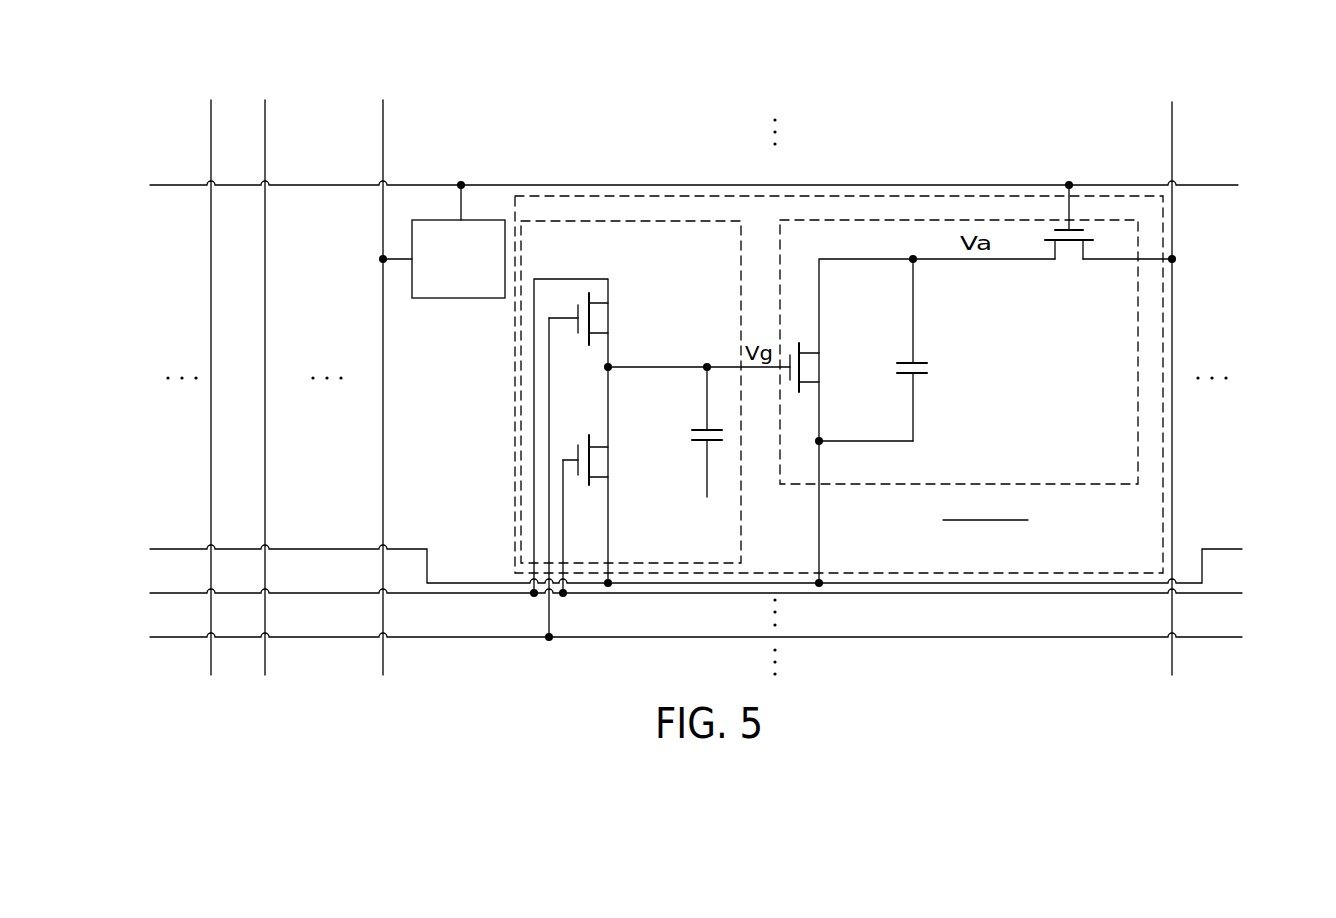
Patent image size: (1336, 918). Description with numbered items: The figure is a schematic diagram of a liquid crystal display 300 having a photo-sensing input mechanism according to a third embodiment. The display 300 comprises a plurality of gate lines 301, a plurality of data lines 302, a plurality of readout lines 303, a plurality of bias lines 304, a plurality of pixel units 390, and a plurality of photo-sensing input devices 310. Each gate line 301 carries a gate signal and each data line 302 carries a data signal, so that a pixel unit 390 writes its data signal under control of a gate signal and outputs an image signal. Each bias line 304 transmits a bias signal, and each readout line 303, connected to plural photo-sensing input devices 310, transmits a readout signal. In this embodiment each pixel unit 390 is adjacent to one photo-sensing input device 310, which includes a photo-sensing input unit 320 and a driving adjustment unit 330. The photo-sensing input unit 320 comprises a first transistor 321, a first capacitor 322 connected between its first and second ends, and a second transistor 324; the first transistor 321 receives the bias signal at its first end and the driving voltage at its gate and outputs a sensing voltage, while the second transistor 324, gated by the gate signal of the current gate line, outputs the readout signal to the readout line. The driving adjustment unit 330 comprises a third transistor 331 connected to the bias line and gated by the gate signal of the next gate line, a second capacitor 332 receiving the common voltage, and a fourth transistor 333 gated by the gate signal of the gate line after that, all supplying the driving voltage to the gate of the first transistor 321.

The liquid crystal display 300 is at (1014, 62).
The gate line 301 is at (297, 187).
The data line 302 is at (295, 138).
The readout line 303 is at (240, 138).
The bias line 304 is at (1216, 548).
The photo-sensing input device 310 is at (825, 196).
The photo-sensing input unit 320 is at (958, 220).
The first transistor 321 is at (825, 372).
The first capacitor 322 is at (932, 370).
The second transistor 324 is at (1068, 262).
The driving adjustment unit 330 is at (640, 220).
The third transistor 331 is at (605, 462).
The second capacitor 332 is at (692, 434).
The fourth transistor 333 is at (605, 318).
The pixel unit 390 is at (447, 300).